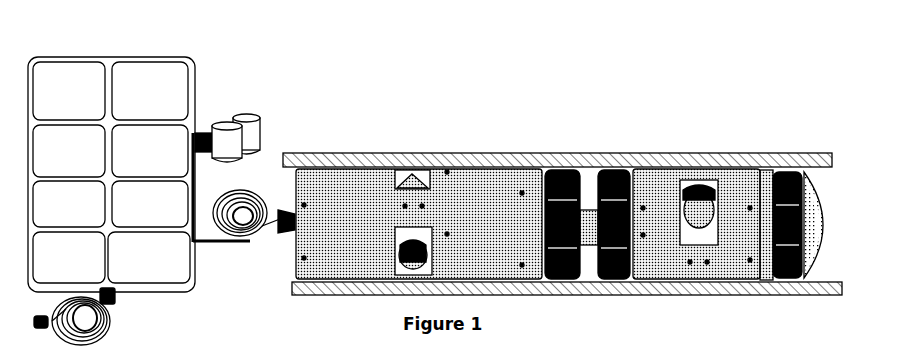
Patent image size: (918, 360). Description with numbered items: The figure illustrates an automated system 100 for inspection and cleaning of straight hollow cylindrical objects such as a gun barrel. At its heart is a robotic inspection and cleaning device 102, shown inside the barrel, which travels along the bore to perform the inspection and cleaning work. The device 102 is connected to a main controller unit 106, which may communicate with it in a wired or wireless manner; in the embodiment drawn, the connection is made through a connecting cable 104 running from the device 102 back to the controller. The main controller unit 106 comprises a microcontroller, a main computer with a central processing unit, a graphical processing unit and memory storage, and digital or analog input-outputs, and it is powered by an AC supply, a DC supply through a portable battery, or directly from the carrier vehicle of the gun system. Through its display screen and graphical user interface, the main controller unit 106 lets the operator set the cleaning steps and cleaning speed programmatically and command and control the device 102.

The automated system 100 is at (521, 32).
The robotic inspection and cleaning device 102 is at (492, 182).
The connecting cable 104 is at (250, 254).
The main controller unit 106 is at (166, 38).